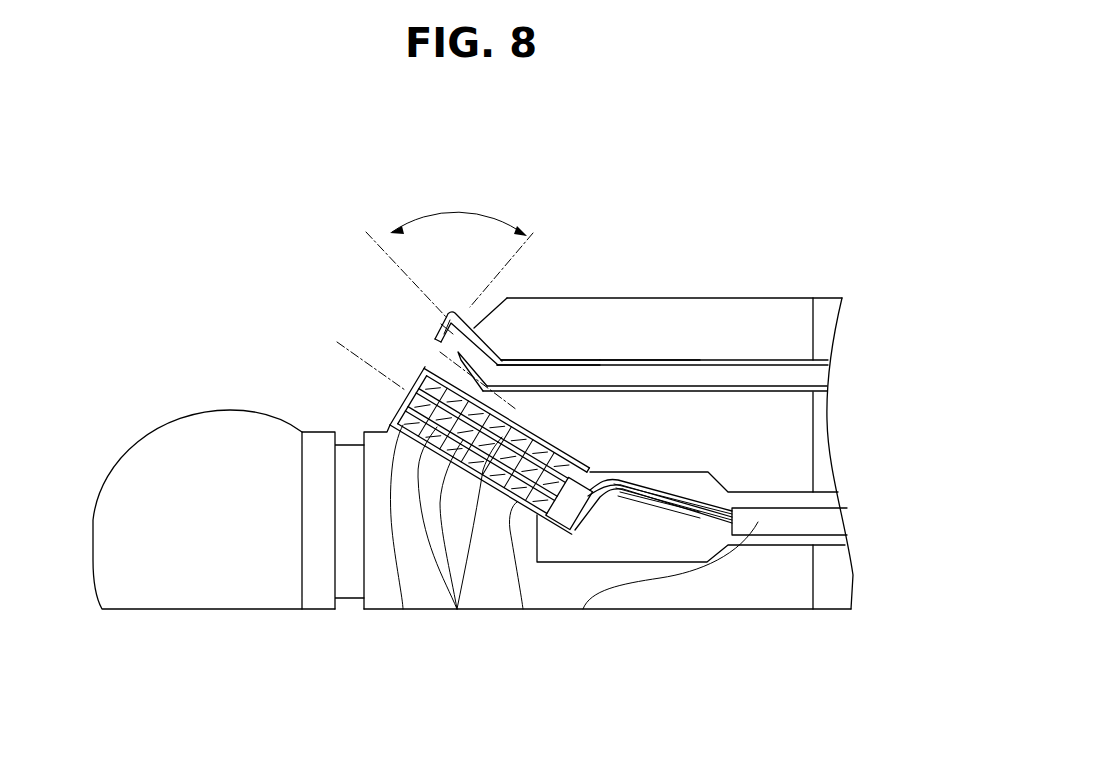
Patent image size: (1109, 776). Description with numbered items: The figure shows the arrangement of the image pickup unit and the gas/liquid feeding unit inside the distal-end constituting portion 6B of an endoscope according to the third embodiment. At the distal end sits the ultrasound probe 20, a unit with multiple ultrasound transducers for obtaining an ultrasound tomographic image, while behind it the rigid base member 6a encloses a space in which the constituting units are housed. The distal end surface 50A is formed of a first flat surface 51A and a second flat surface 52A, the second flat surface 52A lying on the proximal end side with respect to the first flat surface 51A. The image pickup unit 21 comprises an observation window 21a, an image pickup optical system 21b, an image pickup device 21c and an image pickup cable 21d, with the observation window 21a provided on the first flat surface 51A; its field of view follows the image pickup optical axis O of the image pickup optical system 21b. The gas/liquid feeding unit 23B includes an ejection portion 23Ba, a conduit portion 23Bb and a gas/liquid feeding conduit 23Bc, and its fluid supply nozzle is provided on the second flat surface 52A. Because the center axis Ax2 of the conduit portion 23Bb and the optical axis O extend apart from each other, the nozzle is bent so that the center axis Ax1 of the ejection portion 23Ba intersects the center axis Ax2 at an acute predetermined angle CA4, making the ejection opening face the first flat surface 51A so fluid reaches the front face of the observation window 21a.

The distal-end constituting portion 6B is at (288, 216).
The base member 6a is at (768, 298).
The ultrasound probe 20 is at (195, 424).
The image pickup unit 21 is at (600, 650).
The observation window 21a is at (403, 609).
The image pickup optical system 21b is at (457, 609).
The image pickup device 21c is at (523, 609).
The image pickup cable 21d is at (583, 609).
The gas/liquid feeding unit 23B is at (718, 252).
The ejection portion 23Ba is at (475, 350).
The conduit portion 23Bb is at (480, 370).
The gas/liquid feeding conduit 23Bc is at (627, 360).
The distal end surface 50A is at (340, 247).
The first flat surface 51A is at (387, 423).
The second flat surface 52A is at (470, 305).
The image pickup optical axis O is at (337, 342).
The center axis of the ejection portion Ax1 is at (473, 313).
The center axis of the conduit portion Ax2 is at (366, 230).
The predetermined angle CA4 is at (457, 212).